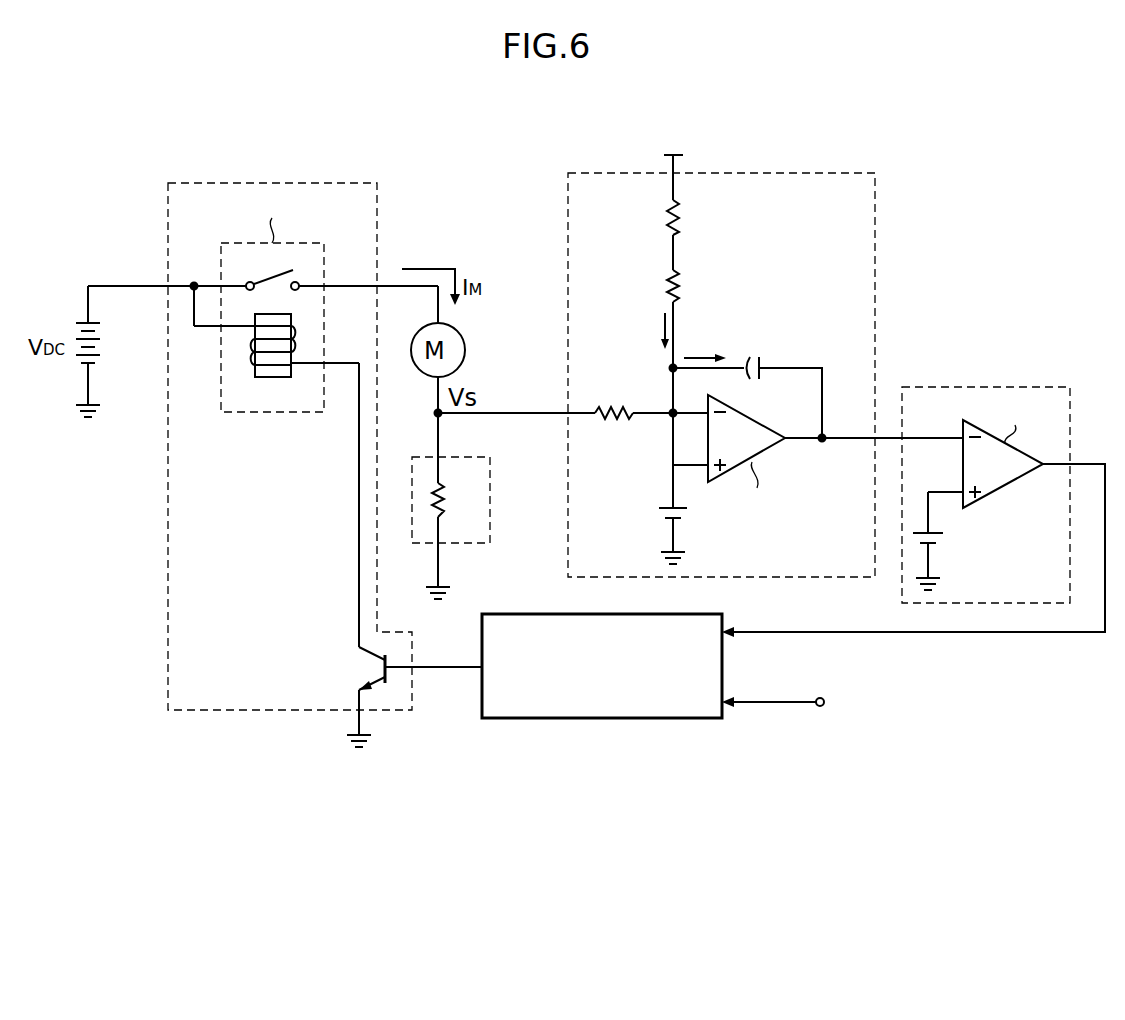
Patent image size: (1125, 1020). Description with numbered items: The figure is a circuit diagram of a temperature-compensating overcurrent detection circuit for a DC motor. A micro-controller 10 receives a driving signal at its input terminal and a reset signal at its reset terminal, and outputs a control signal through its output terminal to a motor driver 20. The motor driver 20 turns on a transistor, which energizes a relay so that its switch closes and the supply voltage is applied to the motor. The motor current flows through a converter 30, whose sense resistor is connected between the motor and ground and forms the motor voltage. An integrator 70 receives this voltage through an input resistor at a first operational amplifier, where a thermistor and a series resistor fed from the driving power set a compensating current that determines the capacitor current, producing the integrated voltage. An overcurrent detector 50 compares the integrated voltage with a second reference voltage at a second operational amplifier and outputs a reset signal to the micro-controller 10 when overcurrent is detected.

The micro-controller 10 is at (590, 720).
The motor driver 20 is at (168, 226).
The converter 30 is at (490, 500).
The overcurrent detector 50 is at (983, 387).
The integrator 70 is at (787, 173).